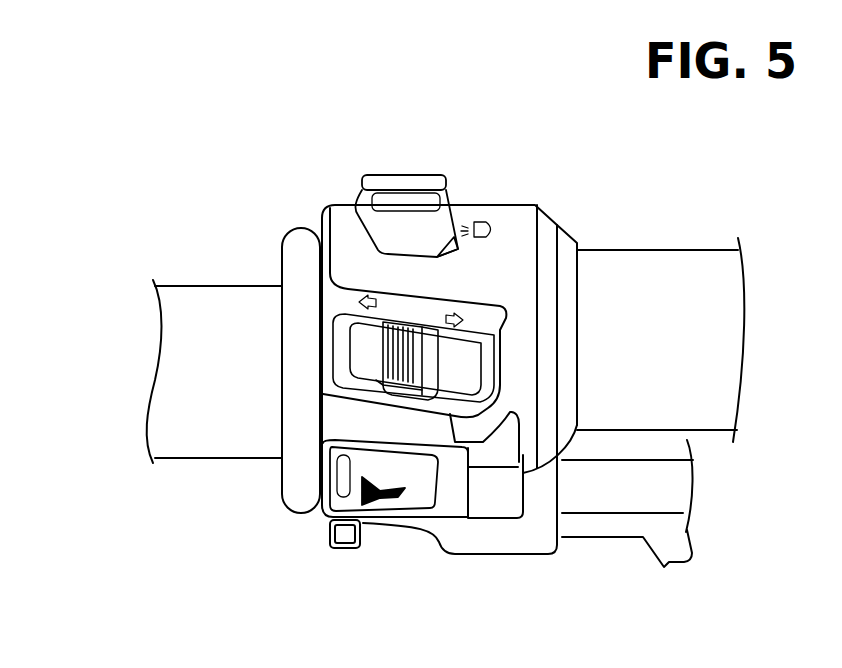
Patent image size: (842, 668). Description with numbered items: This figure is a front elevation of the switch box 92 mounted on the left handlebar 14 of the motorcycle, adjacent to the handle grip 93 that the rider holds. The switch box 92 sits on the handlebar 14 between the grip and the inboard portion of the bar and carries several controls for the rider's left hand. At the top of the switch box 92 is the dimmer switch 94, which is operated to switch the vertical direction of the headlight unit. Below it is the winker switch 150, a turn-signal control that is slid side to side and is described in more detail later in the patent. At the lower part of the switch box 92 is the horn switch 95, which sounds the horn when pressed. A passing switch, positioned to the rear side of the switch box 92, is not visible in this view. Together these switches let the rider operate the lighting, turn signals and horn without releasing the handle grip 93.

The handlebar 14 is at (672, 262).
The switch box 92 is at (347, 220).
The handle grip 93 is at (223, 427).
The dimmer switch 94 is at (402, 178).
The horn switch 95 is at (417, 492).
The winker switch 150 is at (417, 352).